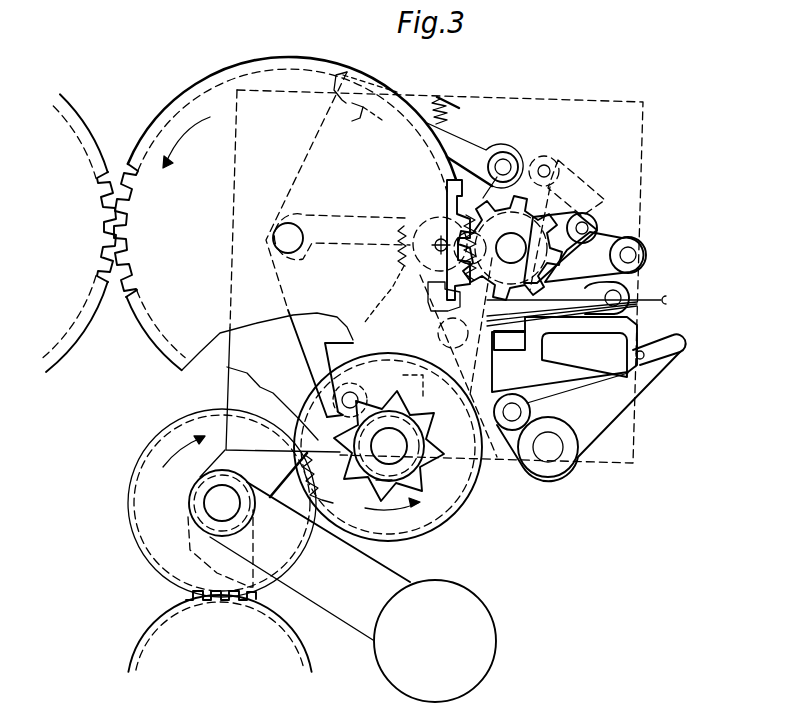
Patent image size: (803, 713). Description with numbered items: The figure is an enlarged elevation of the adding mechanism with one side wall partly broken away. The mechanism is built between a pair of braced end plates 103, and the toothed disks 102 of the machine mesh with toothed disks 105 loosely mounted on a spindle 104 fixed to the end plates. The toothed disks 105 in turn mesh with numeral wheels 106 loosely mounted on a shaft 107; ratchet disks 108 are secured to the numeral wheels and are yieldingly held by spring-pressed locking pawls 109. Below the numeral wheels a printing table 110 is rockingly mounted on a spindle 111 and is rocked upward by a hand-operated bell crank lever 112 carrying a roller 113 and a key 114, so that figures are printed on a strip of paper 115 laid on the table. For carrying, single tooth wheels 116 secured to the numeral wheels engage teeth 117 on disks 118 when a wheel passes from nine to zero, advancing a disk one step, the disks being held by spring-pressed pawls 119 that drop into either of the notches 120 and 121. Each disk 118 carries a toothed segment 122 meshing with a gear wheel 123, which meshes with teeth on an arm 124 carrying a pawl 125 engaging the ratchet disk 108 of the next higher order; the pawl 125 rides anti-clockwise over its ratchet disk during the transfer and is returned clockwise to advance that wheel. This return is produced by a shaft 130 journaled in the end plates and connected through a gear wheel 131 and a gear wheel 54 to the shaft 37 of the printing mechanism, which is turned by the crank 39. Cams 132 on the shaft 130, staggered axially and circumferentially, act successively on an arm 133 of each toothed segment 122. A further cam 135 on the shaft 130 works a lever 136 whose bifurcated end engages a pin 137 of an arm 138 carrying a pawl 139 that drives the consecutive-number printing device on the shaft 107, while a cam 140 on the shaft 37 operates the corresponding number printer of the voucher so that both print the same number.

The shaft of the printing mechanism 37 is at (208, 502).
The crank 39 is at (480, 612).
The gear wheel 54 is at (258, 595).
The toothed disks 102 is at (110, 183).
The end plates 103 is at (232, 288).
The spindle 104 is at (273, 239).
The toothed disks 105 is at (133, 190).
The numeral wheels 106 is at (487, 200).
The shaft 107 is at (511, 248).
The ratchet disks 108 is at (576, 233).
The locking pawls 109 is at (646, 254).
The printing table 110 is at (564, 354).
The spindle 111 is at (630, 289).
The bell crank lever 112 is at (634, 414).
The roller 113 is at (527, 404).
The key 114 is at (682, 352).
The strip of paper 115 is at (596, 311).
The carrying disks 116 is at (455, 253).
The teeth 117 is at (466, 217).
The disks 118 is at (298, 153).
The pawls 119 is at (450, 135).
The notch 120 is at (333, 105).
The notch 121 is at (367, 120).
The toothed segment 122 is at (388, 301).
The gear wheel 123 is at (422, 226).
The arm 124 is at (603, 223).
The pawl 125 is at (598, 229).
The shaft 130 is at (403, 452).
The gear wheel 131 is at (437, 522).
The cams 132 is at (383, 483).
The arm 133 is at (315, 362).
The cam 135 is at (403, 375).
The lever 136 is at (477, 350).
The pin 137 is at (456, 319).
The arm 138 is at (530, 160).
The pawl 139 is at (578, 182).
The cam 140 is at (192, 555).